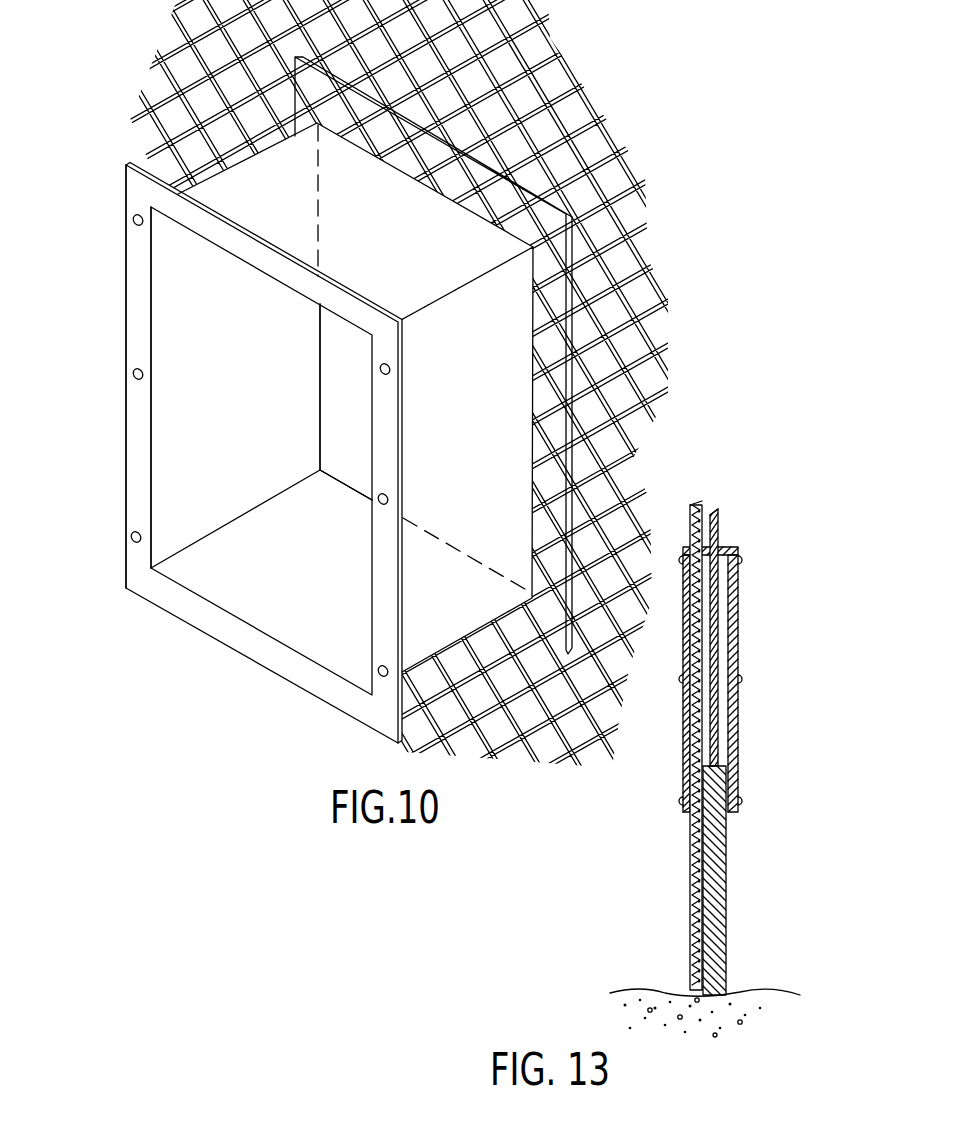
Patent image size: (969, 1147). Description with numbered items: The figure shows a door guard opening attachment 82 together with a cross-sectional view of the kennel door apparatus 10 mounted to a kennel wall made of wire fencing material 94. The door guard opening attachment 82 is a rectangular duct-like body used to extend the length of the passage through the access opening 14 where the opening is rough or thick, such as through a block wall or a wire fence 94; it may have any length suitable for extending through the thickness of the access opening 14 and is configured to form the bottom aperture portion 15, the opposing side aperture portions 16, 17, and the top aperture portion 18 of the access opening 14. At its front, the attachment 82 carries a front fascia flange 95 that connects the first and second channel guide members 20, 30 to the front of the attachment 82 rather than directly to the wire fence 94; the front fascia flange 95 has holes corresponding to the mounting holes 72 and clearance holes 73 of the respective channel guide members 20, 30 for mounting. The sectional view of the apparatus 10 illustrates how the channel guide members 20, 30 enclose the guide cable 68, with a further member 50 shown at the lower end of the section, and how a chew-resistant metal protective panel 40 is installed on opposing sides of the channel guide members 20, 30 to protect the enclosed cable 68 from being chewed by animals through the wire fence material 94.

In FIG. 13, the kennel door apparatus 10 is at (735, 717).
In FIG. 10, the access opening 14 is at (353, 405).
In FIG. 10, the bottom aperture portion 15 is at (352, 488).
In FIG. 10, the side aperture portion 16 is at (318, 372).
In FIG. 10, the side aperture portion 17 is at (530, 488).
In FIG. 10, the top aperture portion 18 is at (380, 160).
In FIG. 13, the first channel guide member 20 is at (720, 593).
In FIG. 13, the second channel guide member 30 is at (742, 708).
In FIG. 13, the protective panel 40 is at (735, 707).
In FIG. 13, the base bar 50 is at (713, 950).
In FIG. 13, the cable 68 is at (718, 527).
In FIG. 10, the mounting holes 72 is at (127, 357).
In FIG. 10, the clearance holes 73 is at (132, 540).
In FIG. 10, the door guard opening attachment 82 is at (138, 440).
In FIG. 10, the wire fencing material 94 is at (643, 282).
In FIG. 13, the wire fencing material 94 is at (693, 903).
In FIG. 10, the front fascia flange 95 is at (138, 483).